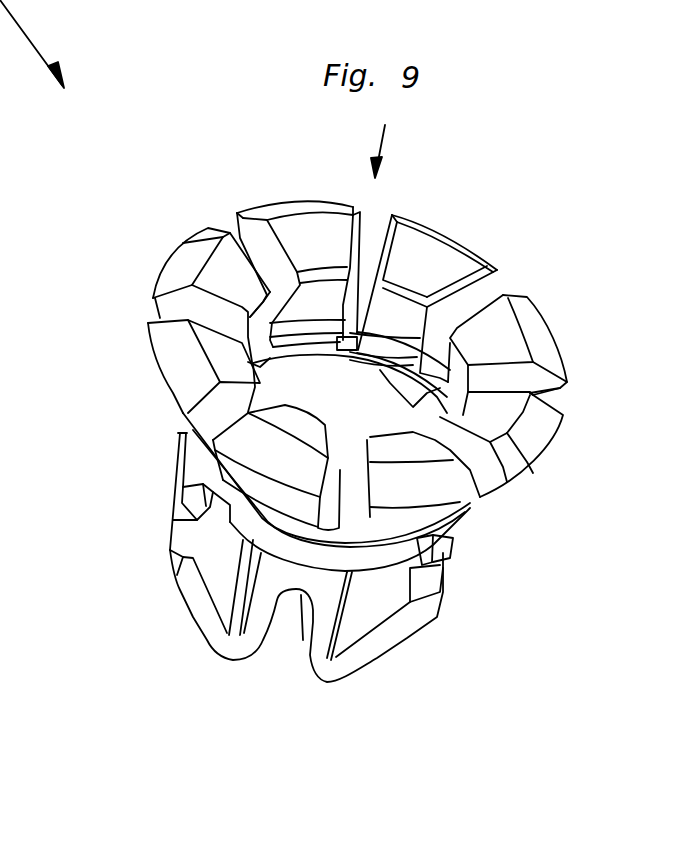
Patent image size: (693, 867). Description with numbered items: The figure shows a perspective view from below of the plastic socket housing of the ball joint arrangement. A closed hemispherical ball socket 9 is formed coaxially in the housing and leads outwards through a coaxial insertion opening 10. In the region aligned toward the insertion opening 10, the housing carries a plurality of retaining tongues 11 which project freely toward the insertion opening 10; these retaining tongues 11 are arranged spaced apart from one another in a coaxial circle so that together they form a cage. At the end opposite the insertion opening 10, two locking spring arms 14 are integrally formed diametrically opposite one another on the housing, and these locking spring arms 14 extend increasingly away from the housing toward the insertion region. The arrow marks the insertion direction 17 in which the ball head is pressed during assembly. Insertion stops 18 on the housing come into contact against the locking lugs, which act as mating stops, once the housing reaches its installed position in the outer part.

The ball socket 9 is at (378, 417).
The insertion opening 10 is at (397, 327).
The retaining tongues 11 is at (193, 353).
The locking spring arms 14 is at (205, 607).
The insertion direction 17 is at (380, 145).
The insertion stops 18 is at (195, 493).